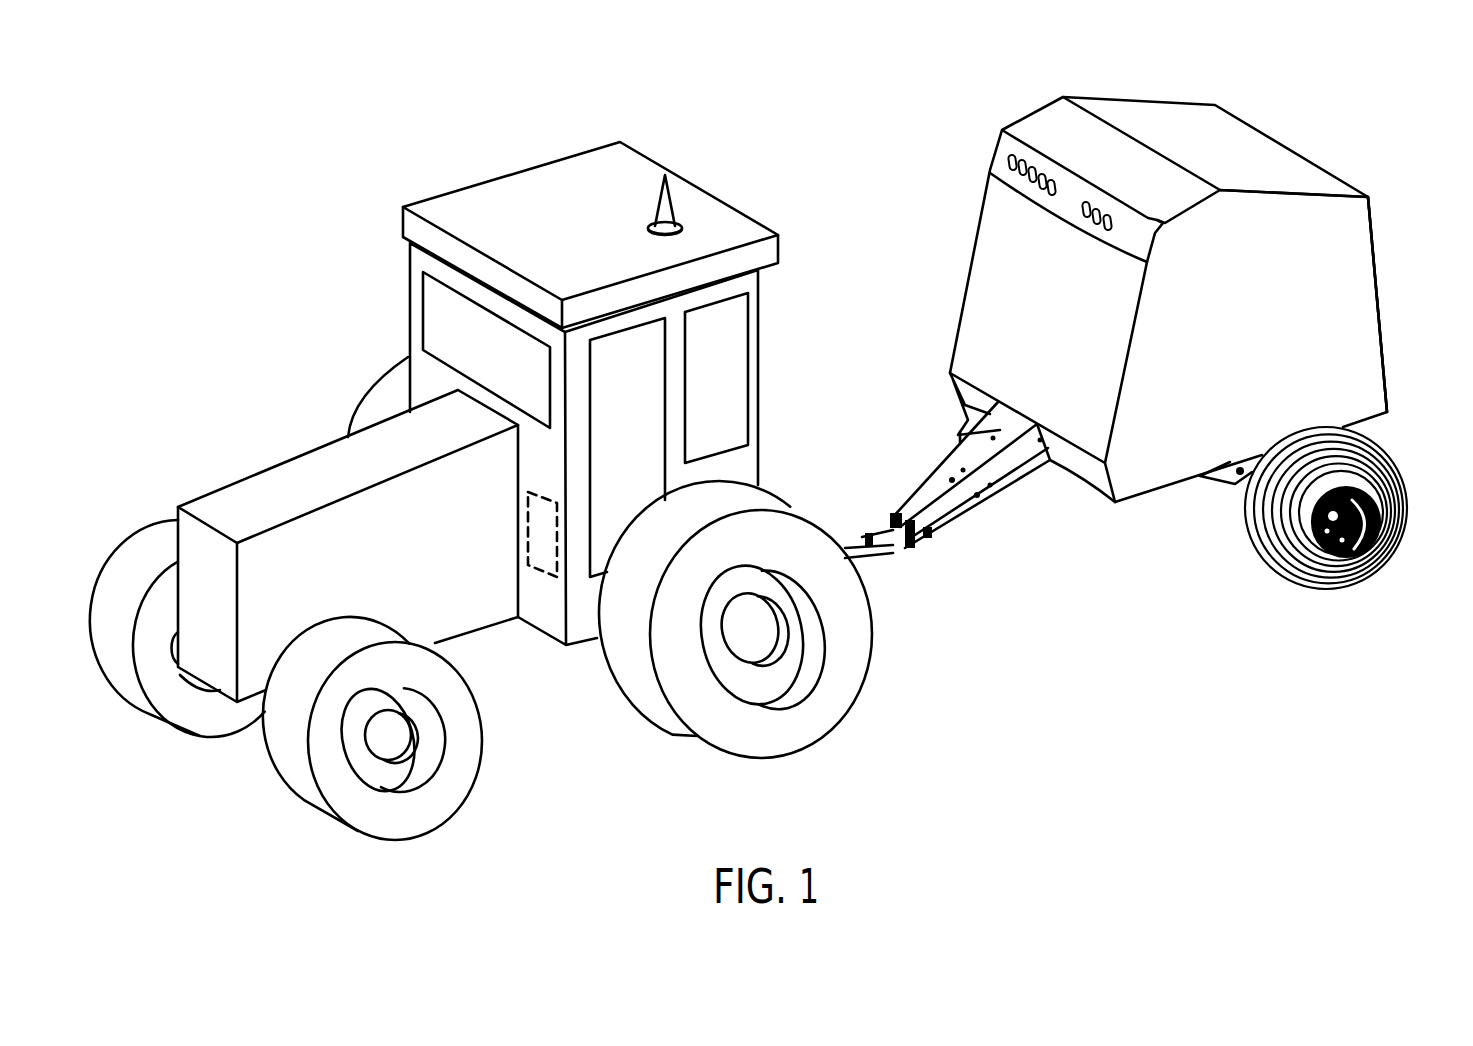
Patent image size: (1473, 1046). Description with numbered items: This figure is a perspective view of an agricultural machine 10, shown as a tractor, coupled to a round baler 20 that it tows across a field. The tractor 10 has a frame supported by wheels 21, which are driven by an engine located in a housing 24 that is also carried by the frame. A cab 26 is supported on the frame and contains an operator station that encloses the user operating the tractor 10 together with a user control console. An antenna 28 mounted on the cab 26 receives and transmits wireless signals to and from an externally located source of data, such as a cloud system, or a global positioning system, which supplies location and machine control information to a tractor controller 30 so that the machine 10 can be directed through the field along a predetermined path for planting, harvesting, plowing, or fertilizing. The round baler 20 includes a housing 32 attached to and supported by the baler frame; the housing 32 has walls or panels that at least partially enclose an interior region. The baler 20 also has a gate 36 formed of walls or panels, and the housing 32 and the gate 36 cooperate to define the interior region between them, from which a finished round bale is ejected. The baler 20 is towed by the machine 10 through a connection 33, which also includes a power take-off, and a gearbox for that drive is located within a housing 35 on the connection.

The agricultural machine 10 is at (398, 108).
The round baler 20 is at (940, 135).
The wheels 21 is at (385, 387).
The housing 24 is at (313, 483).
The cab 26 is at (530, 185).
The antenna 28 is at (668, 200).
The tractor controller 30 is at (540, 535).
The housing 32 is at (1350, 238).
The connection 33 is at (860, 520).
The housing 35 is at (1005, 423).
The gate 36 is at (1383, 292).